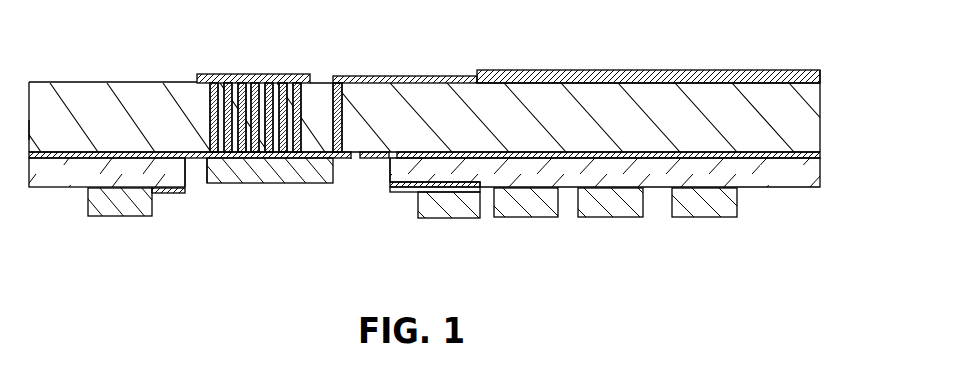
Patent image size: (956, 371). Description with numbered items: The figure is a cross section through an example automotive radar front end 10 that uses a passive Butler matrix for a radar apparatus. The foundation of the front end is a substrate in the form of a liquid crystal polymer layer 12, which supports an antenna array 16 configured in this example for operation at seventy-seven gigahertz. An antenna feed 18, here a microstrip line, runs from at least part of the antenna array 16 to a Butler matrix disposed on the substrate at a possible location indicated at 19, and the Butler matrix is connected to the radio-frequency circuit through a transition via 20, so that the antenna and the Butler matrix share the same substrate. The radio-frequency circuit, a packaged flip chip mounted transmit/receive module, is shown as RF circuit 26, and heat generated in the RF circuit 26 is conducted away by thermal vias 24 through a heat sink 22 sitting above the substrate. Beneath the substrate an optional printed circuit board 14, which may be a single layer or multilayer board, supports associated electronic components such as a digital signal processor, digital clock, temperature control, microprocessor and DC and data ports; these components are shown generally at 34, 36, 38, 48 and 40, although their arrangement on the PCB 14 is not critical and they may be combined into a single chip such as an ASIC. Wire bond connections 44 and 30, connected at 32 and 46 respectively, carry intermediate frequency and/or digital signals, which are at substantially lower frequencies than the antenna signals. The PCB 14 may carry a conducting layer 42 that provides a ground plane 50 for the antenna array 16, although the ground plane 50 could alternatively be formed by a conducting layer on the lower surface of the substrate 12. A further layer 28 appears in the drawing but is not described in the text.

The automotive radar front end 10 is at (82, 61).
The liquid crystal polymer layer 12 is at (125, 100).
The printed circuit board 14 is at (37, 176).
The antenna array 16 is at (542, 72).
The antenna feed 18 is at (463, 72).
The Butler matrix location 19 is at (367, 76).
The transition via 20 is at (342, 130).
The heat sink 22 is at (222, 78).
The thermal vias 24 is at (210, 138).
The RF circuit 26 is at (305, 183).
The bottom conductive layer 28 is at (377, 150).
The wire bond connection 30 is at (408, 190).
The connection point 32 is at (409, 192).
The associated electronic component 34 is at (440, 218).
The associated electronic component 36 is at (517, 217).
The associated electronic component 38 is at (600, 217).
The associated electronic component 40 is at (698, 217).
The conducting layer 42 is at (34, 130).
The wire bond connection 44 is at (197, 158).
The connection point 46 is at (158, 194).
The associated electronic component 48 is at (110, 216).
The ground plane 50 is at (797, 152).